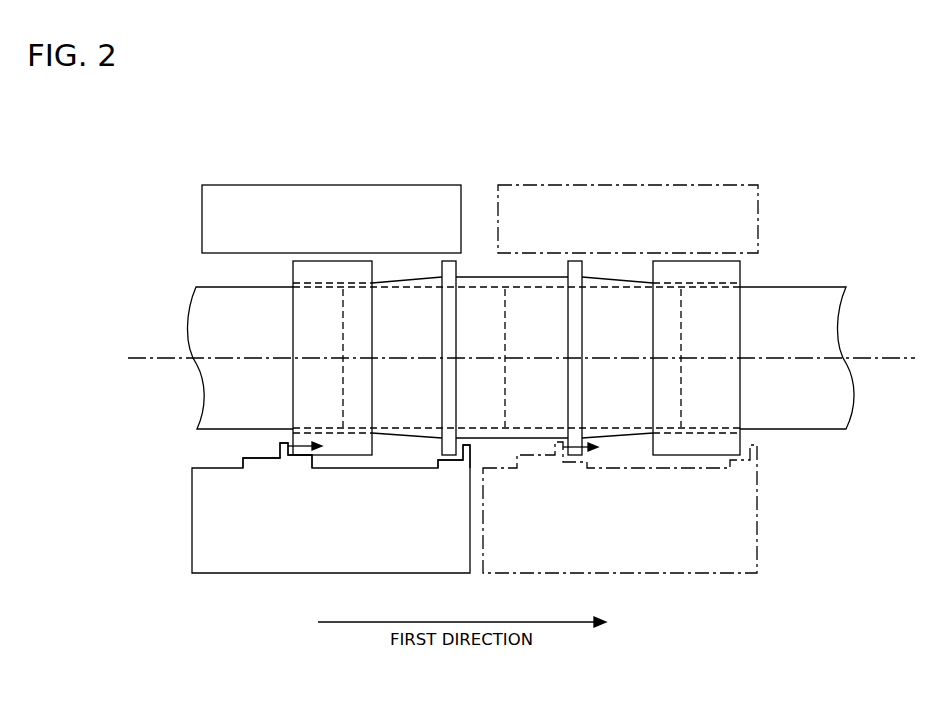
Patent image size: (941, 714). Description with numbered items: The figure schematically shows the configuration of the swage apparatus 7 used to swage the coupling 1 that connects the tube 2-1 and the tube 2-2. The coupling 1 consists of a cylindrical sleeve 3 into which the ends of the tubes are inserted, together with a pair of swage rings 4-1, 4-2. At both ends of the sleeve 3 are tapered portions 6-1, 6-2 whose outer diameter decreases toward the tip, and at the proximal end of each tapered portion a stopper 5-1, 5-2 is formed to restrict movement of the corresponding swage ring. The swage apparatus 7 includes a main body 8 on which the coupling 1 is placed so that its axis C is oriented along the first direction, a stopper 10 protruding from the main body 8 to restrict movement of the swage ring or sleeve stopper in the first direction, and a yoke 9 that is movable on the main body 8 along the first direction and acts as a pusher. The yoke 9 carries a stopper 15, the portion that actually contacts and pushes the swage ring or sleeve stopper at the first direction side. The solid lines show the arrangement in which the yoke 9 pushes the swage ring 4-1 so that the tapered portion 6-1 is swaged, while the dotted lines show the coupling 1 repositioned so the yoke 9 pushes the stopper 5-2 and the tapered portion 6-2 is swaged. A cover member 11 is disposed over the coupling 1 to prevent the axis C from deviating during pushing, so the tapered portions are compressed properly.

The coupling 1 is at (759, 263).
The tube 2-1 is at (217, 285).
The tube 2-2 is at (830, 287).
The sleeve 3 is at (480, 277).
The swage ring 4-1 is at (320, 261).
The swage ring 4-2 is at (695, 261).
The stopper 5-1 is at (446, 261).
The stopper 5-2 is at (572, 261).
The tapered portion 6-1 is at (405, 279).
The tapered portion 6-2 is at (615, 279).
The swage apparatus 7 is at (425, 142).
The main body 8 is at (192, 522).
The yoke 9 is at (262, 459).
The stopper 10 is at (473, 448).
The cover member 11 is at (202, 213).
The stopper 15 is at (282, 444).
The axis C is at (902, 360).